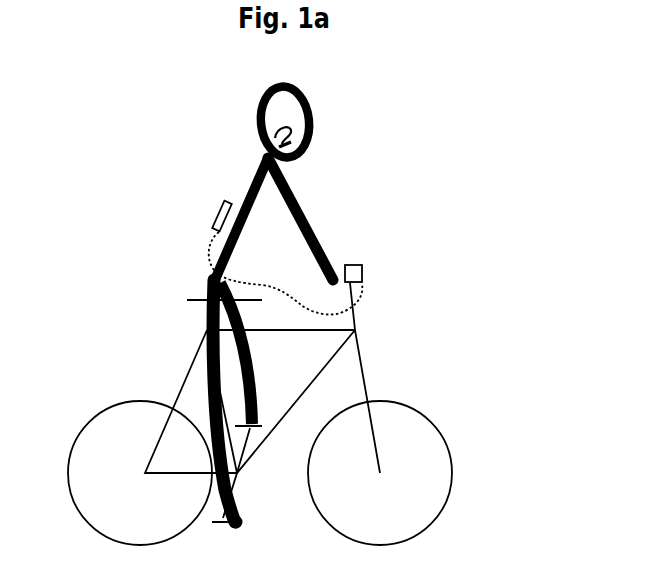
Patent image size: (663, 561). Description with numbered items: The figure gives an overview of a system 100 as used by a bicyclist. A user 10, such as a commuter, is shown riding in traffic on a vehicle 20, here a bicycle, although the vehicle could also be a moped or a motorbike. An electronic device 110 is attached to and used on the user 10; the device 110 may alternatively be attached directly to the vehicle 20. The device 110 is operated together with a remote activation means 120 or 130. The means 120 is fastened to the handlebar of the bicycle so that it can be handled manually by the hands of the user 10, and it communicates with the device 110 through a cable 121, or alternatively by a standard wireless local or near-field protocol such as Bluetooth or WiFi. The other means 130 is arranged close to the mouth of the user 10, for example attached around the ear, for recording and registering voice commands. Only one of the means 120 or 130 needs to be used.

The user 10 is at (290, 195).
The vehicle 20 is at (390, 360).
The system 100 is at (188, 168).
The electronic device 110 is at (217, 222).
The remote activation means 120 is at (363, 269).
The cable 121 is at (208, 249).
The remote activation means 130 is at (312, 122).